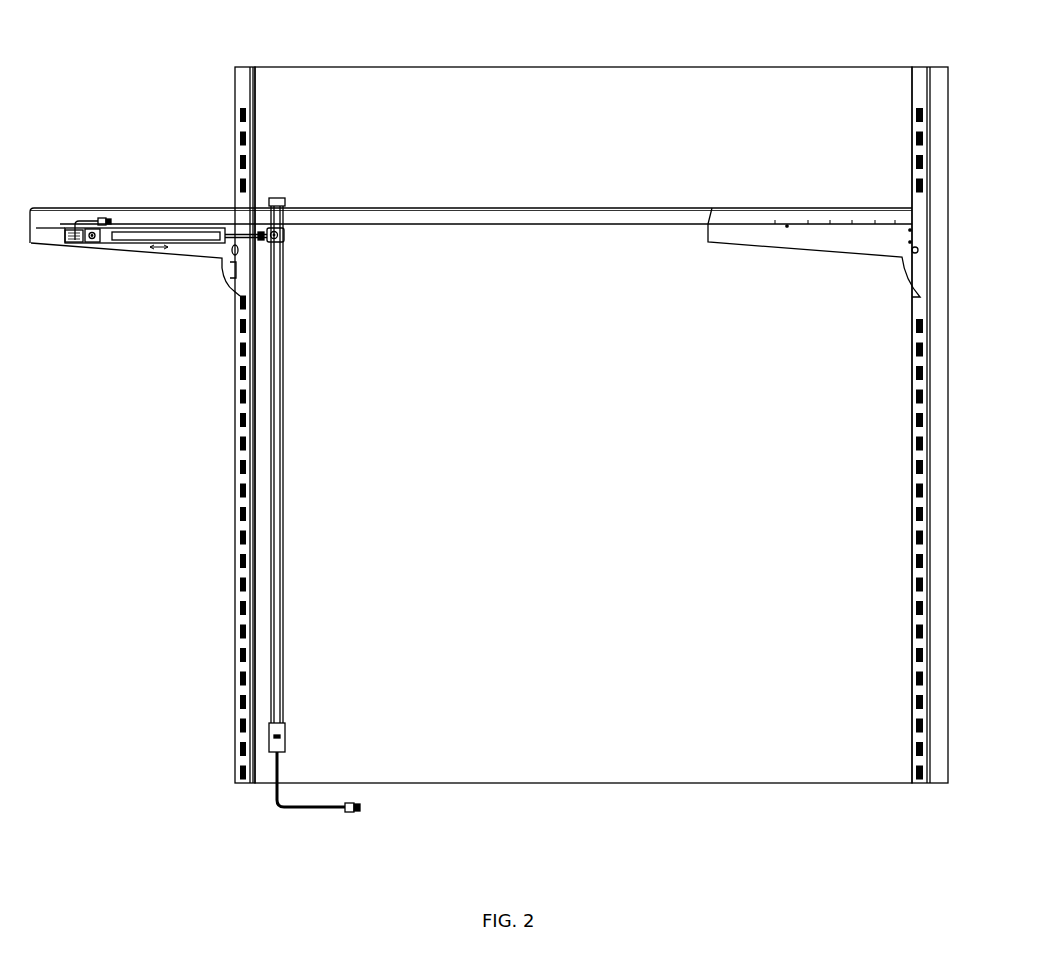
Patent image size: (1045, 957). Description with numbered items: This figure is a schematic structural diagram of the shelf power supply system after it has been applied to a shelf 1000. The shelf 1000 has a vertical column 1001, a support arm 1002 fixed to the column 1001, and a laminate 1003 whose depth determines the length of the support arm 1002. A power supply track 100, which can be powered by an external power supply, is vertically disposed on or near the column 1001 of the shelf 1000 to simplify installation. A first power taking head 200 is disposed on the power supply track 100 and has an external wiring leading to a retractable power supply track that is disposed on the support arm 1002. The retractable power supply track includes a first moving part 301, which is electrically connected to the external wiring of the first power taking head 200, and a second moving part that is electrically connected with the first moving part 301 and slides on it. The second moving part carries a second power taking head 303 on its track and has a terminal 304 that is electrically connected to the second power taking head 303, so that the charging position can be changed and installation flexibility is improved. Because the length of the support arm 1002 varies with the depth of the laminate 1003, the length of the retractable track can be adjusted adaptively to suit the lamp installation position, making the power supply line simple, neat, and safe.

The shelf 1000 is at (565, 83).
The column 1001 is at (246, 80).
The support arm 1002 is at (195, 250).
The laminate 1003 is at (174, 213).
The power supply track 100 is at (276, 455).
The first power taking head 200 is at (286, 236).
The first moving part 301 is at (130, 230).
The second power taking head 303 is at (90, 243).
The terminal 304 is at (80, 218).